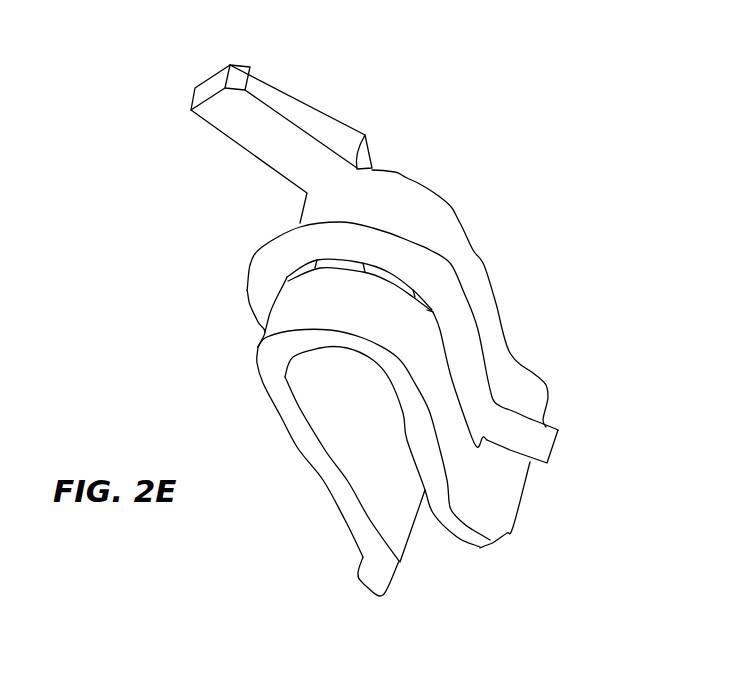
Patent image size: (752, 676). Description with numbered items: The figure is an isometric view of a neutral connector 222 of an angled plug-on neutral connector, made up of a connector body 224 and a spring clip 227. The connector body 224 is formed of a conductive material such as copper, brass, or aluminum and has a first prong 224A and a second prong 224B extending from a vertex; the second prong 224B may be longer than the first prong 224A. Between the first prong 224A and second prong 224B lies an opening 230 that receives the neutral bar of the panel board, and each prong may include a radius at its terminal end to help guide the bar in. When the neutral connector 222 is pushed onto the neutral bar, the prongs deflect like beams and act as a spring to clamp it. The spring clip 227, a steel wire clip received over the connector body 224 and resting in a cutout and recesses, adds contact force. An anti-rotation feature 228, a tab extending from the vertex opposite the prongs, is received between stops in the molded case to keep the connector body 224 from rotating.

The neutral connector 222 is at (172, 224).
The connector body 224 is at (450, 193).
The first prong 224A is at (370, 587).
The second prong 224B is at (493, 542).
The spring clip 227 is at (459, 261).
The anti-rotation feature 228 is at (298, 97).
The opening 230 is at (444, 562).